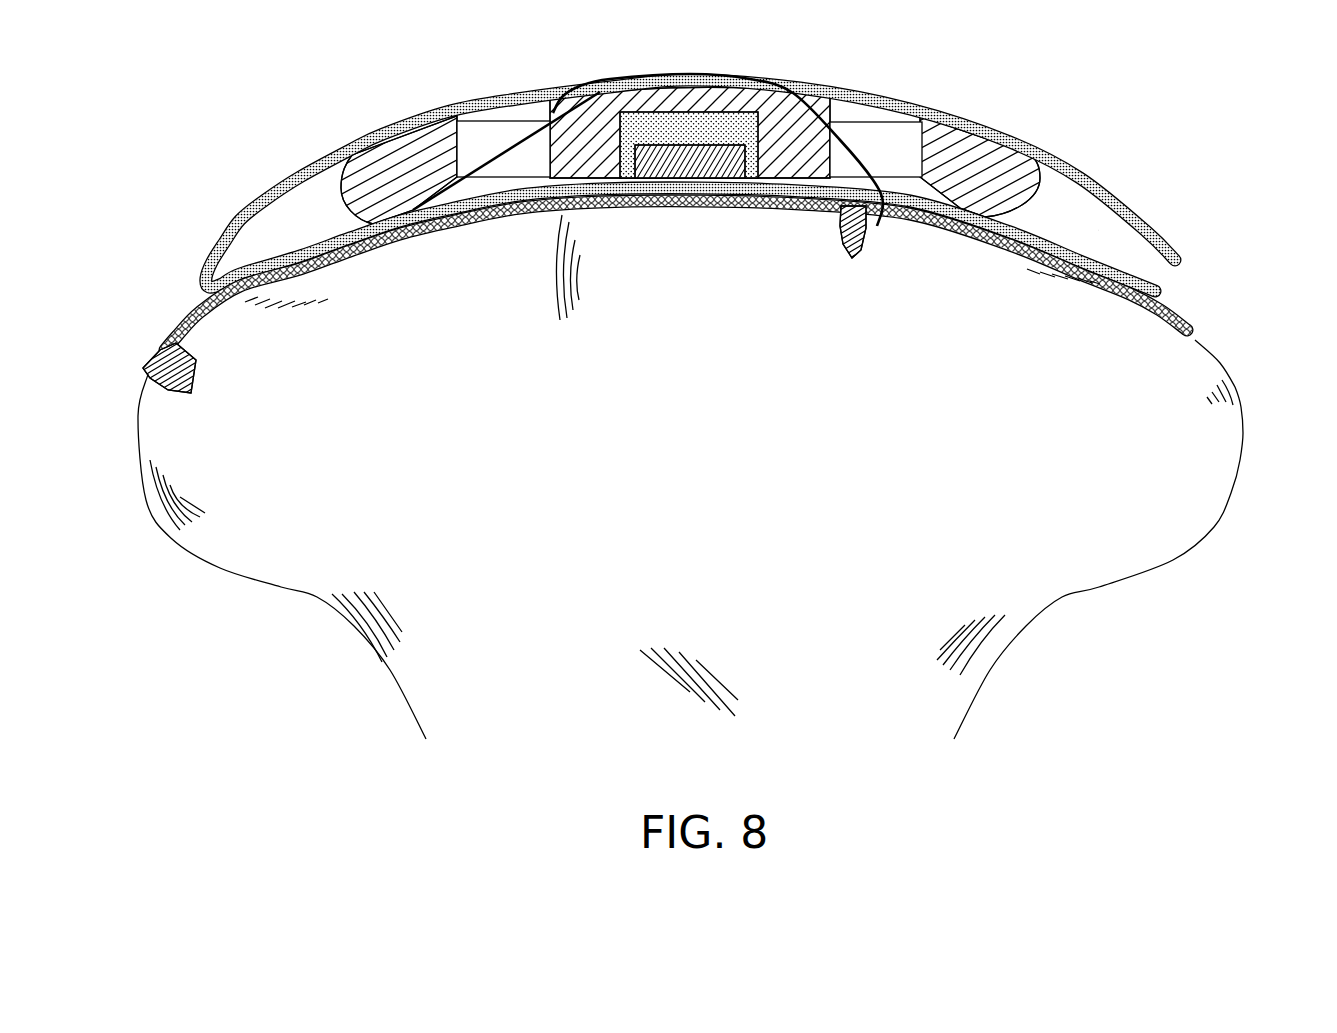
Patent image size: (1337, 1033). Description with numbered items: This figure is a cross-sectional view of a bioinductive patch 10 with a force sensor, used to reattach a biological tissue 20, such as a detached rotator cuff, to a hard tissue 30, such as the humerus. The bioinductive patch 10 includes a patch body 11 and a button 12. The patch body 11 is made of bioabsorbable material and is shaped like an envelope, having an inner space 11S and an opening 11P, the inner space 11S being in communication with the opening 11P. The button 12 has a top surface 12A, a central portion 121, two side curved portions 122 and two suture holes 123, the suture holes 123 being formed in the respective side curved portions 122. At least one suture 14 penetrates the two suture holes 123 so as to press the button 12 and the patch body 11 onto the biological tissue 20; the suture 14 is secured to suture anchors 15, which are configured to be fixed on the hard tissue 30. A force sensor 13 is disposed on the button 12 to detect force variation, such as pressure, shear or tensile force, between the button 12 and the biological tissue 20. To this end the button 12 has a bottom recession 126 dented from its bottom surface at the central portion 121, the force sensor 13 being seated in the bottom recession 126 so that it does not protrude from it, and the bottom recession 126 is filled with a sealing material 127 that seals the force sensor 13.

The bioinductive patch 10 is at (383, 127).
The patch body 11 is at (1010, 132).
The opening 11P is at (1163, 281).
The inner space 11S is at (1098, 230).
The button 12 is at (1042, 171).
The top surface 12A is at (738, 70).
The central portion 121 is at (700, 103).
The side curved portions 122 is at (437, 150).
The suture holes 123 is at (510, 132).
The bottom recession 126 is at (578, 116).
The sealing material 127 is at (650, 123).
The force sensor 13 is at (672, 182).
The suture 14 is at (868, 150).
The suture anchors 15 is at (870, 238).
The biological tissue 20 is at (1194, 321).
The hard tissue 30 is at (1248, 405).